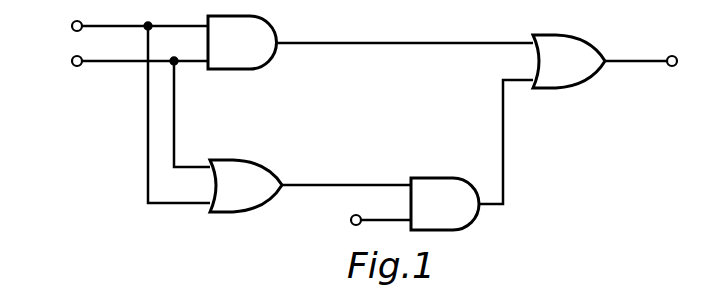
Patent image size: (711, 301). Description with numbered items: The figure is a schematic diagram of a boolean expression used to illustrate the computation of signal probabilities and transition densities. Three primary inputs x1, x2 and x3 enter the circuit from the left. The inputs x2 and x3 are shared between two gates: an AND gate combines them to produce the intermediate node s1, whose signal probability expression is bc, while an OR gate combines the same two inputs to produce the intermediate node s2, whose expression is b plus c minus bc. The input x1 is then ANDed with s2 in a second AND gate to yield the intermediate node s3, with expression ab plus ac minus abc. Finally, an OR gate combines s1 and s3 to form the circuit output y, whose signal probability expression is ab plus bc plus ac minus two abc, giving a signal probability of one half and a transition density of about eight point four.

The input signal x1 is at (369, 220).
The input signal x2 is at (126, 109).
The input signal x3 is at (126, 108).
The intermediate node s1 is at (404, 30).
The intermediate node s2 is at (346, 172).
The intermediate node s3 is at (506, 142).
The circuit output y is at (652, 62).